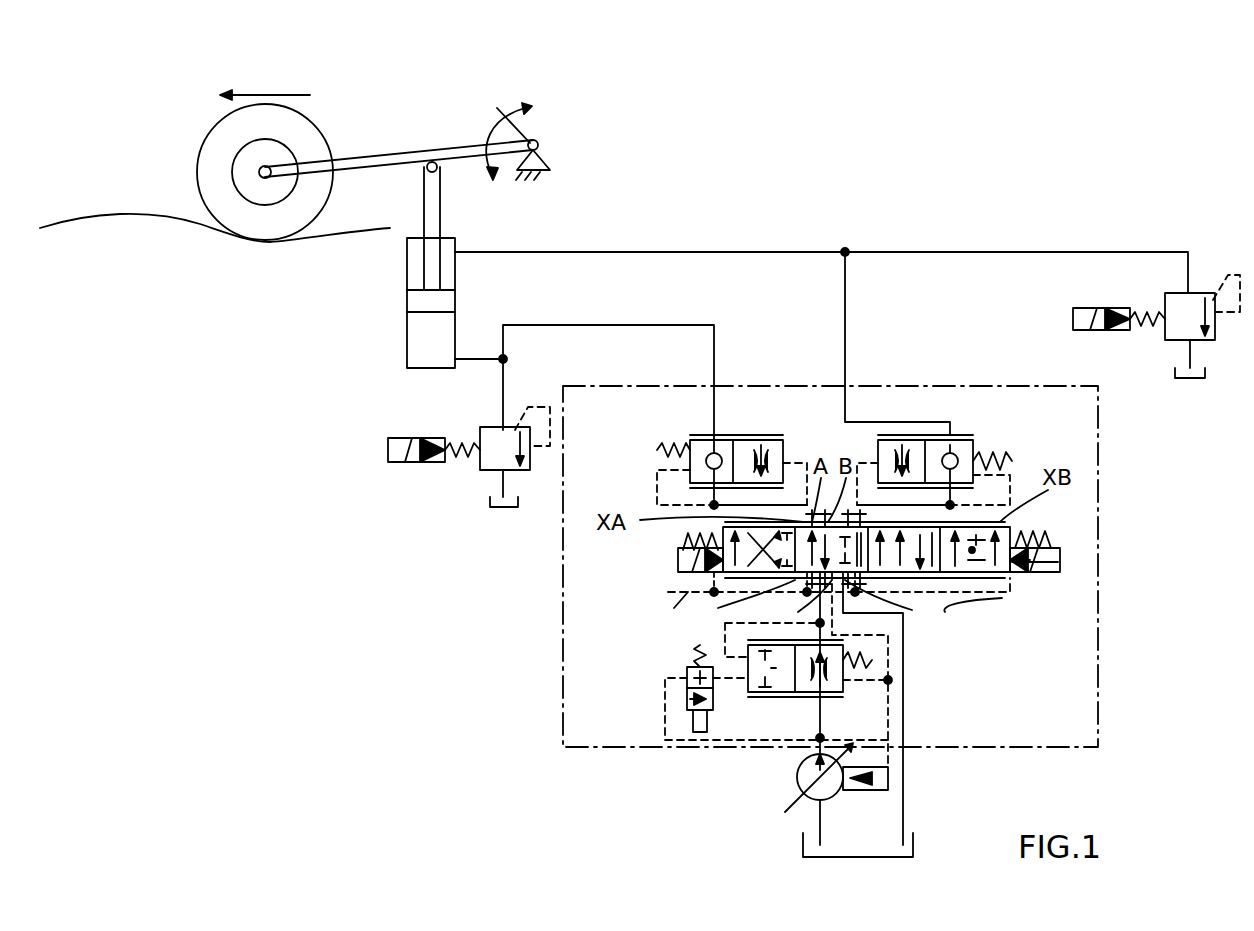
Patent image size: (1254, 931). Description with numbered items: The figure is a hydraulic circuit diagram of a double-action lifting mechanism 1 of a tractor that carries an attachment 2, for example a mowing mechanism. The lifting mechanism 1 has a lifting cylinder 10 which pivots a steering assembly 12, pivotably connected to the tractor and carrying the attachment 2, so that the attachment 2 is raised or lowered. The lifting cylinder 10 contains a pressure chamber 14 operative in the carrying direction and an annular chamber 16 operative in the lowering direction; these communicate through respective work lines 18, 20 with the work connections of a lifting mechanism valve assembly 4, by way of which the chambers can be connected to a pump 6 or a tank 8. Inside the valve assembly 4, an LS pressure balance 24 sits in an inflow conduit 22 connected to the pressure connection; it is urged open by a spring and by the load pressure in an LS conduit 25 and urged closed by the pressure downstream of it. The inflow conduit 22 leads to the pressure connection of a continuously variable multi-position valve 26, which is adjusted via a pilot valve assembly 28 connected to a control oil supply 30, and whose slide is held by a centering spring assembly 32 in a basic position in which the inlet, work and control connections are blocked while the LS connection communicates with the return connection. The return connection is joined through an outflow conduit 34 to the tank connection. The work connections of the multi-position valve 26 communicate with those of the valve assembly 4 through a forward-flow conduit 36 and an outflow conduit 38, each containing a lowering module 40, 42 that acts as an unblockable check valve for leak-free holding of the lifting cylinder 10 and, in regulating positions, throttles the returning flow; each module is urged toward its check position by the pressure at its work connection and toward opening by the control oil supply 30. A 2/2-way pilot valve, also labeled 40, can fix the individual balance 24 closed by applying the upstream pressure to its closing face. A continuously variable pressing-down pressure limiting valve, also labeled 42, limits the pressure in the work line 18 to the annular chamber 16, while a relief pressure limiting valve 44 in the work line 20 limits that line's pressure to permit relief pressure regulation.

The lifting mechanism 1 is at (424, 122).
The attachment 2 is at (220, 135).
The lifting mechanism valve assembly 4 is at (1100, 528).
The pump 6 is at (815, 792).
The tank 8 is at (852, 856).
The lifting cylinder 10 is at (405, 316).
The steering assembly 12 is at (360, 155).
The pressure chamber 14 is at (435, 347).
The annular chamber 16 is at (410, 268).
The work line 18 is at (670, 250).
The work line 20 is at (660, 325).
The inflow conduit 22 is at (815, 727).
The LS pressure balance 24 is at (870, 668).
The load sensing line 25 is at (892, 682).
The continuously variable multi-position valve 26 is at (1003, 594).
The pilot valve assembly 28 is at (1062, 562).
The control oil supply 30 is at (650, 597).
The centering spring assembly 32 is at (1040, 524).
The outflow conduit 34 is at (905, 735).
The forward-flow conduit 36 is at (714, 418).
The outflow conduit 38 is at (915, 418).
The lowering module 40 is at (700, 463).
The lowering module 42 is at (1185, 290).
The relief pressure limiting valve 44 is at (490, 460).